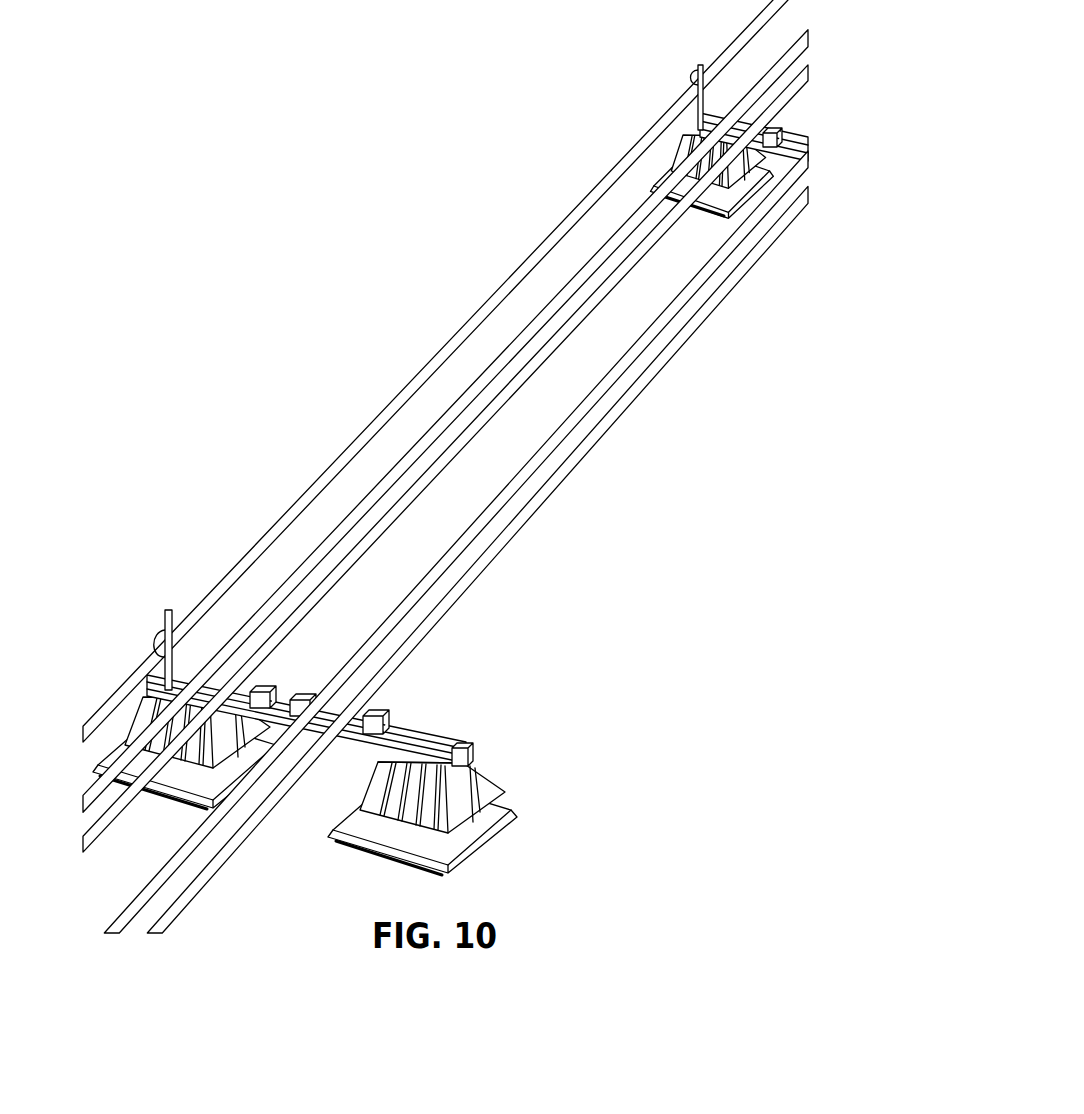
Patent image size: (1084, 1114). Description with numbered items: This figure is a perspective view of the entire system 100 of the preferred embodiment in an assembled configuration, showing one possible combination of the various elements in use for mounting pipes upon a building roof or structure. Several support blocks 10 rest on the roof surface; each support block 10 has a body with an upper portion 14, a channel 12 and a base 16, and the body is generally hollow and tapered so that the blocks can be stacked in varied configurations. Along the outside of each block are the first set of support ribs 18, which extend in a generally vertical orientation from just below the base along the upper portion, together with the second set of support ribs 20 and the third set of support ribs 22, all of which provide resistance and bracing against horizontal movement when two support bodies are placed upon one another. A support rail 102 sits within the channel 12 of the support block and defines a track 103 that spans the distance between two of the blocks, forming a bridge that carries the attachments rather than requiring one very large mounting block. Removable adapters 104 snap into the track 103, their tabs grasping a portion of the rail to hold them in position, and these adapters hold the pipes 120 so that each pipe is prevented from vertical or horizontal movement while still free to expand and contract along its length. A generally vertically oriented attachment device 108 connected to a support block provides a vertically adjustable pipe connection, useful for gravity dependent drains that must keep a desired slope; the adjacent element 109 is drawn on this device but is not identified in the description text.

The support block 10 is at (435, 815).
The channel 12 is at (425, 814).
The upper portion 14 is at (377, 775).
The base 16 is at (455, 829).
The first set of support ribs 18 is at (468, 803).
The second set of support ribs 20 is at (372, 809).
The third set of support ribs 22 is at (410, 812).
The system 100 is at (445, 466).
The support rail 102 is at (398, 728).
The track 103 is at (455, 768).
The removable adapter 104 is at (303, 693).
The vertically oriented attachment device 108 is at (166, 610).
The loop 109 is at (152, 640).
The pipe 120 is at (472, 325).